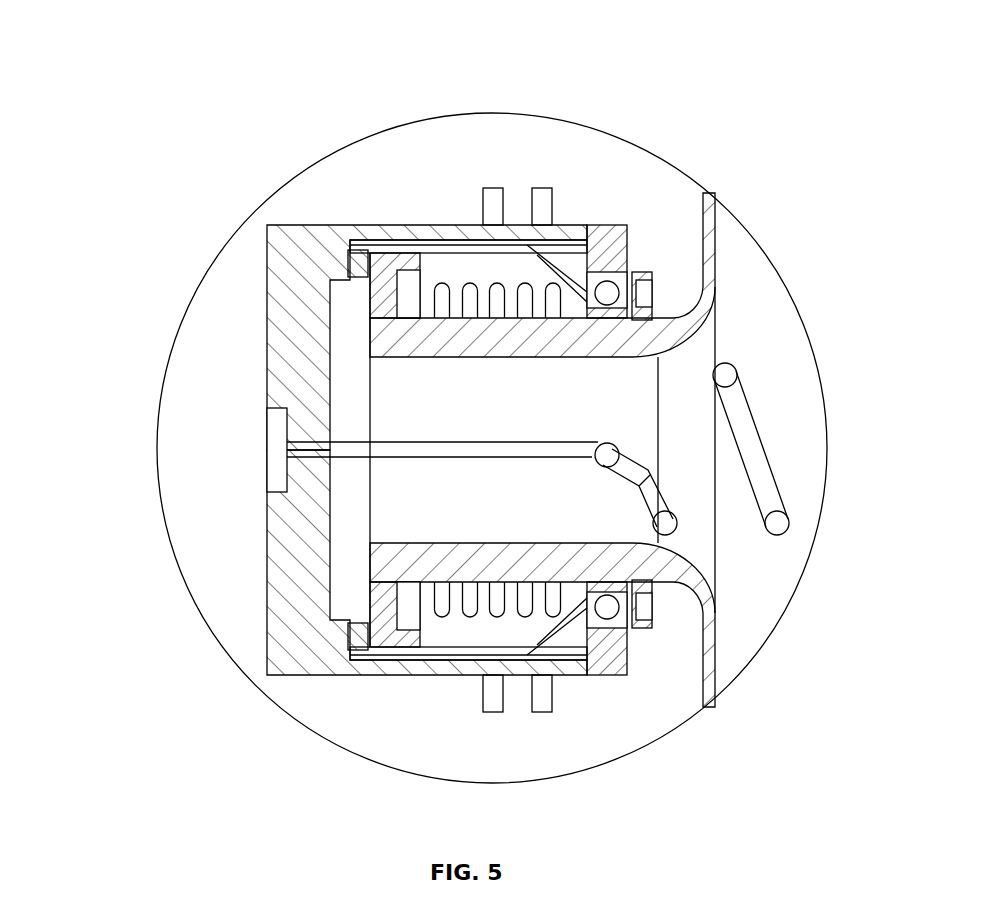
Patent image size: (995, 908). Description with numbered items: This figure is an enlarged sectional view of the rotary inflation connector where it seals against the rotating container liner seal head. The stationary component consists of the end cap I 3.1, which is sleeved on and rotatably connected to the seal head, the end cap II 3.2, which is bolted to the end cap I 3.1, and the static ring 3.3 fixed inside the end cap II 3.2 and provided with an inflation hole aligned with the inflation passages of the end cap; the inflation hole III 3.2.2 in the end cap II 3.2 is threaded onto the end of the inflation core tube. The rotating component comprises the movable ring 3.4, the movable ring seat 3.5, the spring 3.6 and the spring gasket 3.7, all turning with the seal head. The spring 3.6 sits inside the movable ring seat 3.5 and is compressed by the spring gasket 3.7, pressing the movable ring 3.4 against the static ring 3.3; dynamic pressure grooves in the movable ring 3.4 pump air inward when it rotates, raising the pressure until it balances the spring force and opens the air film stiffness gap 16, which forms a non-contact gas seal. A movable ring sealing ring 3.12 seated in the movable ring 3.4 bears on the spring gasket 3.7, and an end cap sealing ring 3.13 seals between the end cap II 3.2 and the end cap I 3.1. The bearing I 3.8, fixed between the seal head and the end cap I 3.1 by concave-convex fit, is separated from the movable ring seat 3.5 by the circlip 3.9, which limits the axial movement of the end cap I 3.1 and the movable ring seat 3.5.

The end cap I 3.1 is at (607, 295).
The end cap II 3.2 is at (278, 243).
The inflation hole III 3.2.2 is at (275, 452).
The static ring 3.3 is at (358, 275).
The movable ring 3.4 is at (388, 273).
The movable ring seat 3.5 is at (528, 287).
The spring 3.6 is at (612, 242).
The spring gasket 3.7 is at (422, 587).
The bearing I 3.8 is at (652, 273).
The circlip 3.9 is at (645, 630).
The movable ring sealing ring 3.12 is at (403, 592).
The end cap sealing ring 3.13 is at (515, 668).
The air film stiffness gap 16 is at (368, 588).